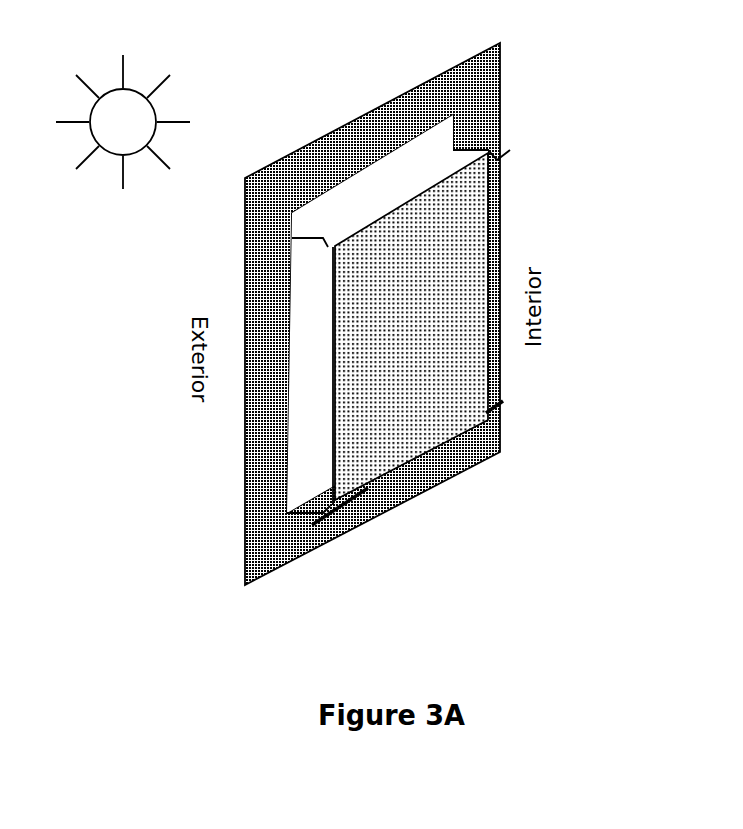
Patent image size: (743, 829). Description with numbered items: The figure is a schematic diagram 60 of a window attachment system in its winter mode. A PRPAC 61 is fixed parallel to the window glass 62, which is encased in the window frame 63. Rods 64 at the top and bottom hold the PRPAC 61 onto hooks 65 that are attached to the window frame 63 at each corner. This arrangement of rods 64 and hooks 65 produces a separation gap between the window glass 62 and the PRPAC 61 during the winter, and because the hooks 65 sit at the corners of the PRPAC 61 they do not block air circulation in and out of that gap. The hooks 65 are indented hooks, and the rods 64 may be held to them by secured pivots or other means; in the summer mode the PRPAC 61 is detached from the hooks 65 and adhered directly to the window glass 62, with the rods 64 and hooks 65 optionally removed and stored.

The diagram 60 is at (407, 327).
The PRPAC 61 is at (423, 400).
The window glass 62 is at (312, 453).
The window frame 63 is at (255, 400).
The rods 64 is at (377, 210).
The hooks 65 is at (325, 248).